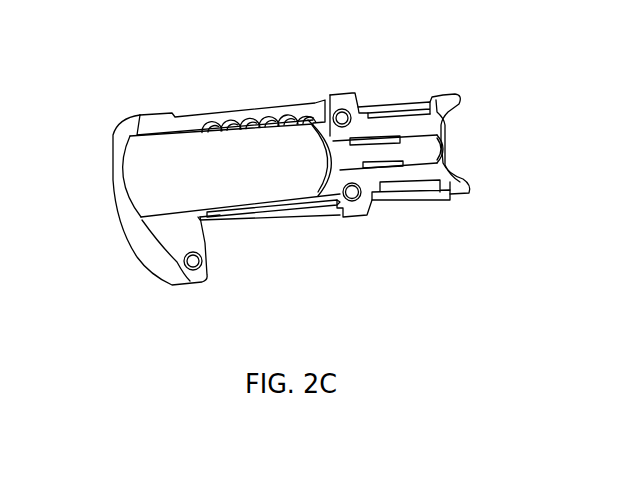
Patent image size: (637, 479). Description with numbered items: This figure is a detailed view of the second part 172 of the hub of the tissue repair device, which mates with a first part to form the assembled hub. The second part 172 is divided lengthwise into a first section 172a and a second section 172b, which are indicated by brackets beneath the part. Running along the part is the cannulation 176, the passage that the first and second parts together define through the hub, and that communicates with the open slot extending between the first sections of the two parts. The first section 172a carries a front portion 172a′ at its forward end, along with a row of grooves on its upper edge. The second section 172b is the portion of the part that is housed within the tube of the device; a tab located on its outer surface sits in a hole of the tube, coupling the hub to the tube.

The second part 172 is at (249, 112).
The first section 172a is at (357, 273).
The second section 172b is at (490, 262).
The front portion 172a′ is at (147, 257).
The cannulation 176 is at (140, 174).